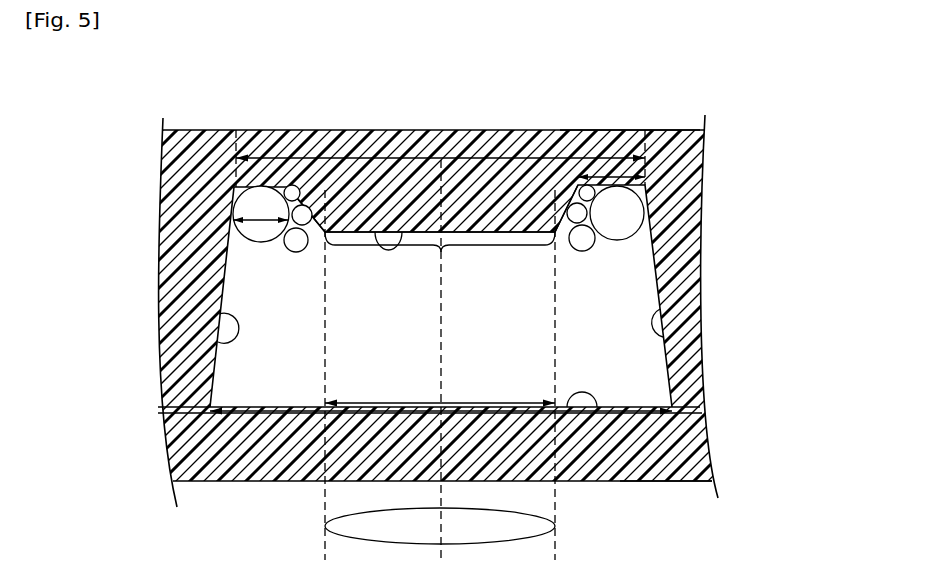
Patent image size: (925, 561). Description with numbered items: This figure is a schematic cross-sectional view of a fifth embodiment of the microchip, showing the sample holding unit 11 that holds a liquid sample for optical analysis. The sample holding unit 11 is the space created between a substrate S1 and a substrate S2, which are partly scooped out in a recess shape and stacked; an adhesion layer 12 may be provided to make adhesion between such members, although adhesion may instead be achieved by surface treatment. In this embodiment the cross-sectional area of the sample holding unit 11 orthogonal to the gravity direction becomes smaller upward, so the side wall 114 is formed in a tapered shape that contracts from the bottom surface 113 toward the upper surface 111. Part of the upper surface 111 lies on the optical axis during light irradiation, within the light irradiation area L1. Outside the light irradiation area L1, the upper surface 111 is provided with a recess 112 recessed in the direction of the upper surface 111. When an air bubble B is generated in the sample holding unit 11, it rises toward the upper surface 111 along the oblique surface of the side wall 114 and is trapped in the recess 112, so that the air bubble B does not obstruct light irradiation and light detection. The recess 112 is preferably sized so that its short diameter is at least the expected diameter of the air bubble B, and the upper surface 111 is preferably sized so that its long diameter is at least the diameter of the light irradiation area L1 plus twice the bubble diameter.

The sample holding unit 11 is at (305, 341).
The adhesion layer 12 is at (160, 412).
The upper surface 111 is at (399, 232).
The recess 112 is at (293, 184).
The bottom surface 113 is at (586, 413).
The side wall 114 is at (227, 343).
The air bubble B is at (625, 233).
The substrate S1 is at (621, 134).
The substrate S2 is at (690, 465).
The light irradiation area L1 is at (440, 257).